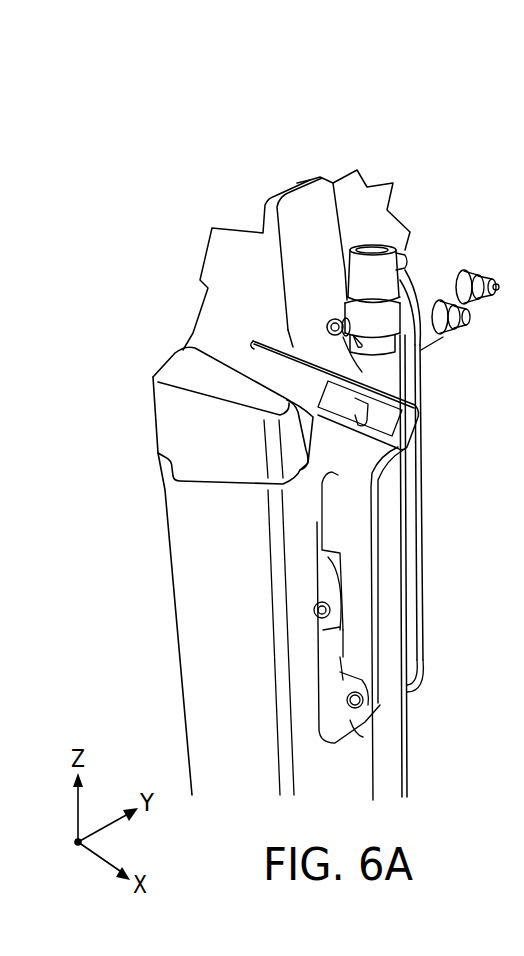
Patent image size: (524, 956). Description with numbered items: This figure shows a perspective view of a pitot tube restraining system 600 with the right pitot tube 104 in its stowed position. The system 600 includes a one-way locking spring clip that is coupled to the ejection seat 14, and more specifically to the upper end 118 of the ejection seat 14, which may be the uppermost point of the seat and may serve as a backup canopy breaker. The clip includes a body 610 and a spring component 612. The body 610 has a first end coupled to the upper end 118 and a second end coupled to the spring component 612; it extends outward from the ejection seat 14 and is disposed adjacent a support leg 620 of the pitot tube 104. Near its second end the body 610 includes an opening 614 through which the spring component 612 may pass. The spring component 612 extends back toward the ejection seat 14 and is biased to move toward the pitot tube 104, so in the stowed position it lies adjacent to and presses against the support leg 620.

The pitot tube restraining system 600 is at (178, 128).
The ejection seat 14 is at (135, 315).
The upper end 118 is at (167, 427).
The body 610 is at (283, 370).
The opening 614 is at (343, 385).
The spring component 612 is at (418, 416).
The support leg 620 is at (370, 560).
The right pitot tube 104 is at (403, 758).